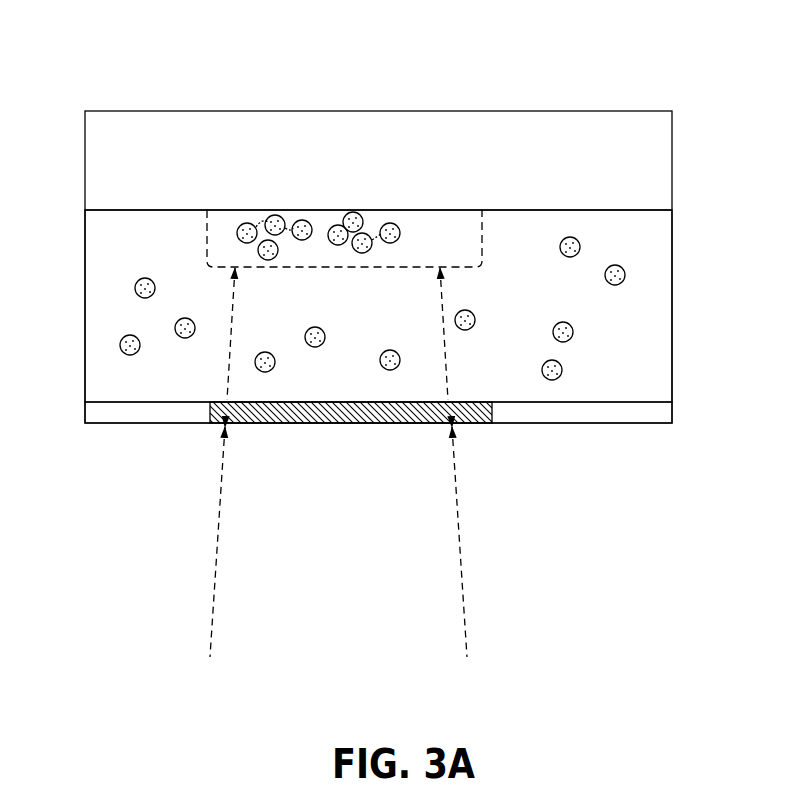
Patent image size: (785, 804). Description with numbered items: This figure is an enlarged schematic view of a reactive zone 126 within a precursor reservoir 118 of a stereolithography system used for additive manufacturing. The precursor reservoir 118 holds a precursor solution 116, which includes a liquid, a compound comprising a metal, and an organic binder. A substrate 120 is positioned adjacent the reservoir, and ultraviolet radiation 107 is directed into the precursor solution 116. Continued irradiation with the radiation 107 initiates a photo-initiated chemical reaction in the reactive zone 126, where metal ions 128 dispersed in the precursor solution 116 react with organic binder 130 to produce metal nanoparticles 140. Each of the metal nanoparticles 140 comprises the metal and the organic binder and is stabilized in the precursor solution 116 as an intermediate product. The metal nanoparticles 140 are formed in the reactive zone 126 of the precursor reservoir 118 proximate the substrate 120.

The radiation 107 is at (472, 621).
The precursor solution 116 is at (108, 380).
The precursor reservoir 118 is at (676, 412).
The substrate 120 is at (672, 150).
The reactive zone 126 is at (205, 234).
The metal ions 128 is at (623, 291).
The organic binder 130 is at (374, 221).
The metal nanoparticles 140 is at (328, 228).